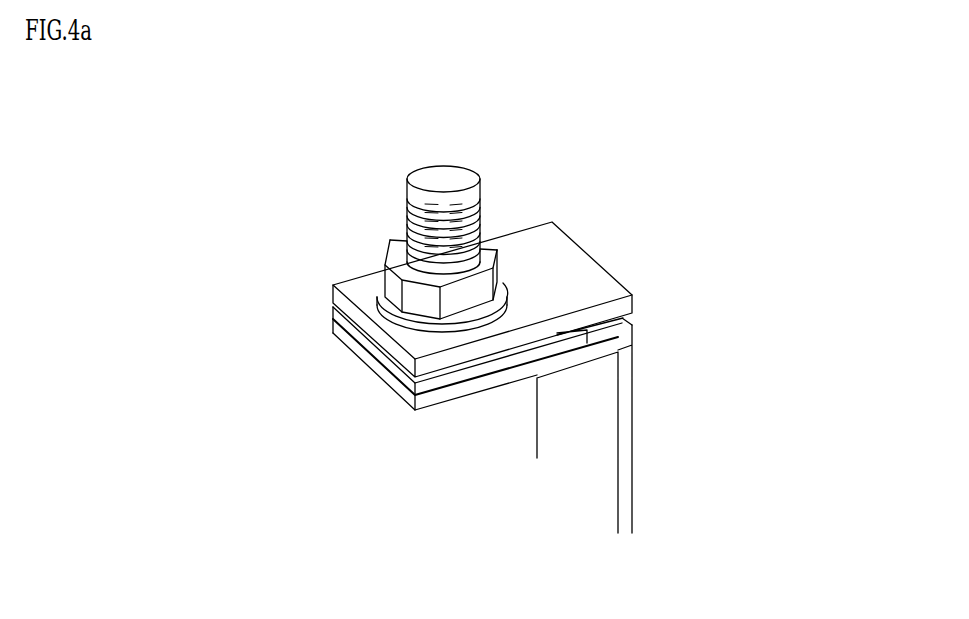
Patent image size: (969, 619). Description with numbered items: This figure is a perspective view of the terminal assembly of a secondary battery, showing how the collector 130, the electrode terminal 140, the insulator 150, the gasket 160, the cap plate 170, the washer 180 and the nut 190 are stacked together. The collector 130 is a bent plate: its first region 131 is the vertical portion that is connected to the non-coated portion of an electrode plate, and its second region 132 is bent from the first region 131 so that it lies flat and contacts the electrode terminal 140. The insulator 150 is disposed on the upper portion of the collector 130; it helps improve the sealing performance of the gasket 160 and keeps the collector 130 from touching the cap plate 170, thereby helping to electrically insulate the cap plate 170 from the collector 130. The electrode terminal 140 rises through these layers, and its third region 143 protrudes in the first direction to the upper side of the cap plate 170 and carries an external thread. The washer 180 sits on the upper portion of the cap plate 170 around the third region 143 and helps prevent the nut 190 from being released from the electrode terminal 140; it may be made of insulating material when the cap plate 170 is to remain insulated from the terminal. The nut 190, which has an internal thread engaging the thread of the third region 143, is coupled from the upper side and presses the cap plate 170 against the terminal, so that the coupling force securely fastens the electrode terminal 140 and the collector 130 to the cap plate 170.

The collector 130 is at (637, 425).
The first region of the collector 131 is at (625, 441).
The second region of the collector 132 is at (562, 357).
The electrode terminal 140 is at (475, 188).
The third region of the electrode terminal 143 is at (443, 173).
The insulator 150 is at (385, 360).
The gasket 160 is at (466, 364).
The cap plate 170 is at (580, 263).
The washer 180 is at (381, 284).
The nut 190 is at (391, 240).